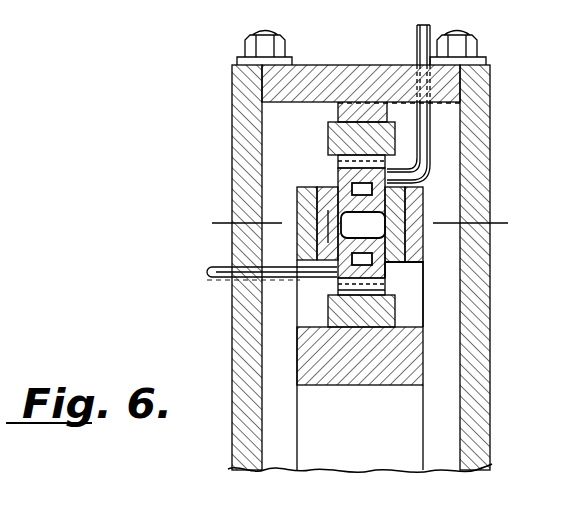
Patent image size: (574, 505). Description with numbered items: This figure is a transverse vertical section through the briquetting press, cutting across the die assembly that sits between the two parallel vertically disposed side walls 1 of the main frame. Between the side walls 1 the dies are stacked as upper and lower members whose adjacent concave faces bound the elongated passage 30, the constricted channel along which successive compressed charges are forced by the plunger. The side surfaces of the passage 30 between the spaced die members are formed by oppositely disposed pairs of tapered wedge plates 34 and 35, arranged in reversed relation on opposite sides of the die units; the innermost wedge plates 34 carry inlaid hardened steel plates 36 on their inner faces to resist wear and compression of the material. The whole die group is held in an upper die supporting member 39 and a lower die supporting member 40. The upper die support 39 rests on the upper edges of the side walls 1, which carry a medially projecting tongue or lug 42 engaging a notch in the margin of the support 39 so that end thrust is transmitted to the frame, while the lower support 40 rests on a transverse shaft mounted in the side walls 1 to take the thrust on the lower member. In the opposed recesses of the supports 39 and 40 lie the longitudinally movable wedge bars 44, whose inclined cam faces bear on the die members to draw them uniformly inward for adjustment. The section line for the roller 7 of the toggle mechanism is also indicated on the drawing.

The side walls 1 is at (479, 157).
The roller 7 is at (358, 226).
The elongated passage 30 is at (368, 224).
The wedge plates 34 is at (402, 264).
The wedge plates 35 is at (413, 208).
The hardened steel plates 36 is at (328, 210).
The upper die supporting member 39 is at (407, 73).
The lower die supporting member 40 is at (348, 367).
The tongue or lug 42 is at (474, 82).
The wedge bars 44 is at (346, 137).